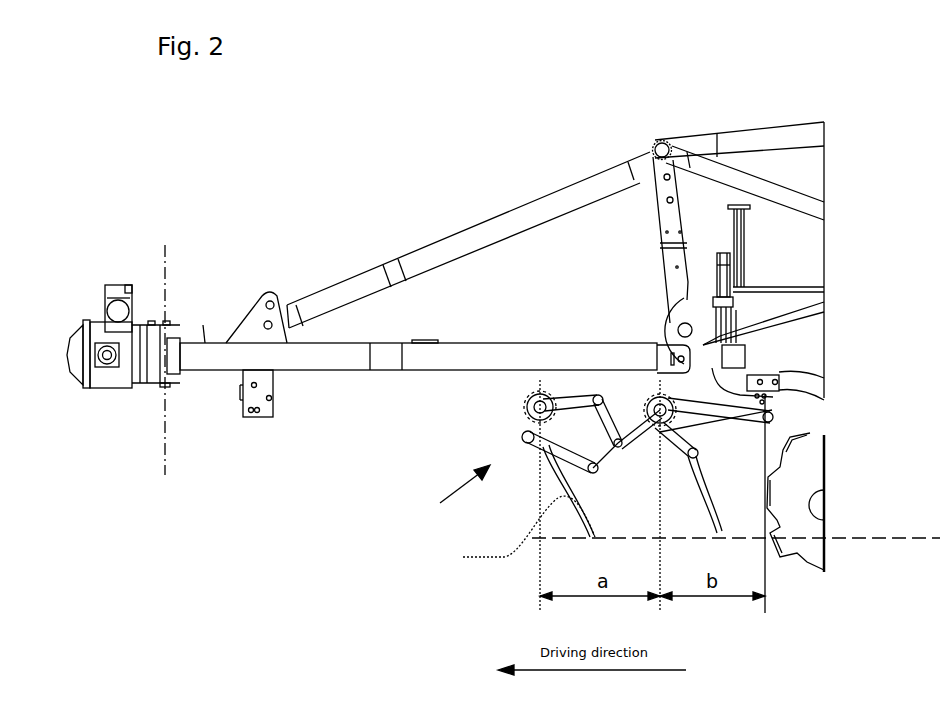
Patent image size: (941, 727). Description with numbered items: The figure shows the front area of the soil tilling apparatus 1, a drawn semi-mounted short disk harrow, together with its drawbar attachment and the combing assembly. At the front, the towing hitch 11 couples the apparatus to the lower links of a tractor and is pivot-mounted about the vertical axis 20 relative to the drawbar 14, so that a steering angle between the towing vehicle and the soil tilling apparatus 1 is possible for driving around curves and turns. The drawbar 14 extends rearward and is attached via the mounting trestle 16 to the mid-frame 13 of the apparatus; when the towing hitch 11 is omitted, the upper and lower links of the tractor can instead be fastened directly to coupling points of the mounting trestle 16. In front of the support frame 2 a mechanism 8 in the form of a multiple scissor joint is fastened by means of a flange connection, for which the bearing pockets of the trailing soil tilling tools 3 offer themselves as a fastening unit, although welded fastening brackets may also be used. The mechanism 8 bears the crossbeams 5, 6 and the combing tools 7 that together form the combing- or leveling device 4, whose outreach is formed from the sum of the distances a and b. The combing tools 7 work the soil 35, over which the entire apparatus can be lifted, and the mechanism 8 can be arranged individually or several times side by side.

The soil tilling apparatus 1 is at (665, 92).
The support frame 2 is at (760, 318).
The trailing soil tilling tools 3 is at (817, 548).
The combing- or leveling device 4 is at (459, 496).
The crossbeam 5 is at (543, 398).
The crossbeam 6 is at (673, 343).
The combing tools 7 is at (522, 531).
The mechanism 8 is at (604, 390).
The towing hitch 11 is at (117, 373).
The mid-frame 13 is at (795, 305).
The drawbar 14 is at (303, 357).
The mounting trestle 16 is at (670, 217).
The vertical axis 20 is at (167, 275).
The soil 35 is at (880, 540).